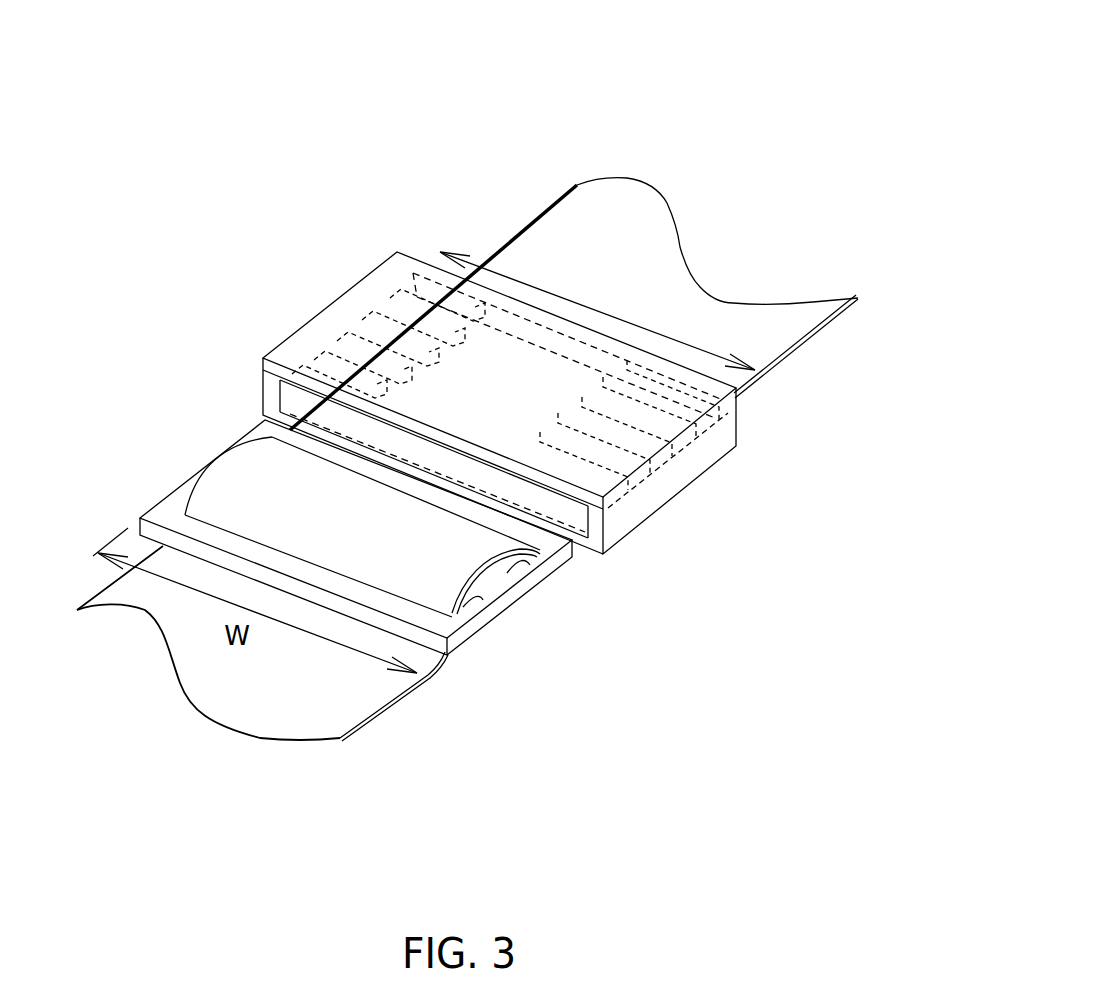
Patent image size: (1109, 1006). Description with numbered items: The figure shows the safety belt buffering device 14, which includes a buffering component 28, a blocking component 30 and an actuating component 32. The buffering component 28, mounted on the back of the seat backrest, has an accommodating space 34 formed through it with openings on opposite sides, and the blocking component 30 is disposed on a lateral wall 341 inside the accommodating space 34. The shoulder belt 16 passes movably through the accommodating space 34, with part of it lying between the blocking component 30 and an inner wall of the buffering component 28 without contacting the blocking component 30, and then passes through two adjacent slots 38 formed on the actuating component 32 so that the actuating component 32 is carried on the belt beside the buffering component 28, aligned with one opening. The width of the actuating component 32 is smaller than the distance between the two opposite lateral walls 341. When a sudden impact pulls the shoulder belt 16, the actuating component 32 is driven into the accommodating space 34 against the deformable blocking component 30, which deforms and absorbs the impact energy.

The safety belt buffering device 14 is at (750, 90).
The shoulder belt 16 is at (360, 697).
The buffering component 28 is at (735, 420).
The blocking component 30 is at (292, 374).
The actuating component 32 is at (502, 583).
The accommodating space 34 is at (565, 354).
The lateral wall 341 is at (278, 402).
The slots 38 is at (518, 562).